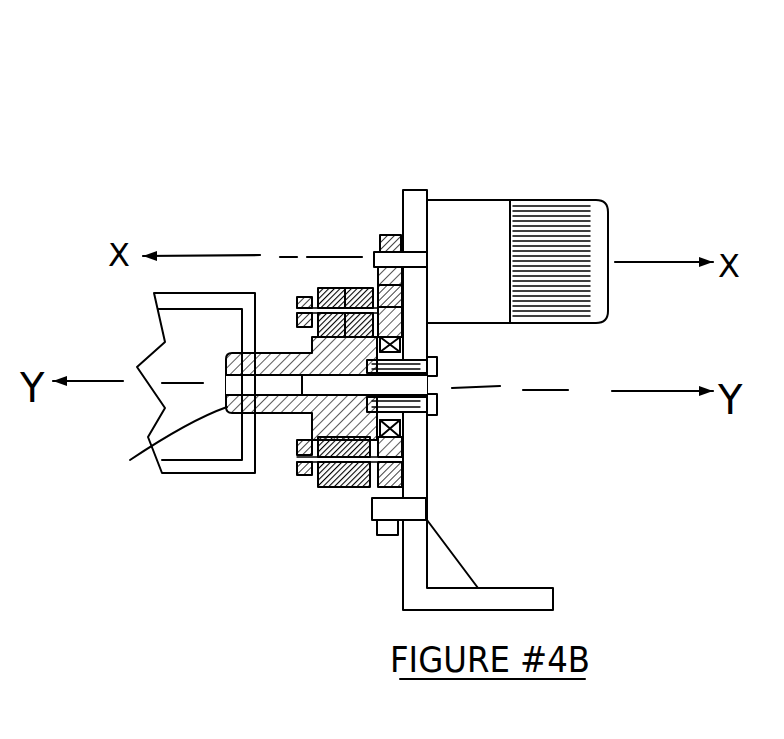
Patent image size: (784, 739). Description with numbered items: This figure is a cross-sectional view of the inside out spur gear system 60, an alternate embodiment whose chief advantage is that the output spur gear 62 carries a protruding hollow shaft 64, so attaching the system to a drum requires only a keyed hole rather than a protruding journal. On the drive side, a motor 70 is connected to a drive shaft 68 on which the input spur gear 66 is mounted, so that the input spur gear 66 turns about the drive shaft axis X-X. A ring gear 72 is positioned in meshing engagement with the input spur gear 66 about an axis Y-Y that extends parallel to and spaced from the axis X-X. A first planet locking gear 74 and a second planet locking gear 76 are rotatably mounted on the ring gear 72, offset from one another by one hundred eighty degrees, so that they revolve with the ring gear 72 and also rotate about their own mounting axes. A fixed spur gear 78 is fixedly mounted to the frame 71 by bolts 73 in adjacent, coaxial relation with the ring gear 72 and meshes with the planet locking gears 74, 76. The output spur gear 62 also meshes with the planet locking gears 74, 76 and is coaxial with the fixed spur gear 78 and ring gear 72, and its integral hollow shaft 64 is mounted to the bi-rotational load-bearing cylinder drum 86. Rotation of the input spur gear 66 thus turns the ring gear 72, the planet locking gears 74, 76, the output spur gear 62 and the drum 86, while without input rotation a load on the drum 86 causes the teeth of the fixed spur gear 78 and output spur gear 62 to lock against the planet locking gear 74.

The inside out spur gear system 60 is at (193, 80).
The output spur gear 62 is at (323, 415).
The hollow shaft 64 is at (150, 445).
The input spur gear 66 is at (360, 206).
The drive shaft 68 is at (407, 263).
The motor 70 is at (517, 235).
The frame 71 is at (478, 400).
The ring gear 72 is at (400, 297).
The bolts 73 is at (437, 407).
The first planet locking gear 74 is at (316, 451).
The second planet locking gear 76 is at (329, 294).
The fixed spur gear 78 is at (352, 317).
The cylinder drum 86 is at (173, 468).